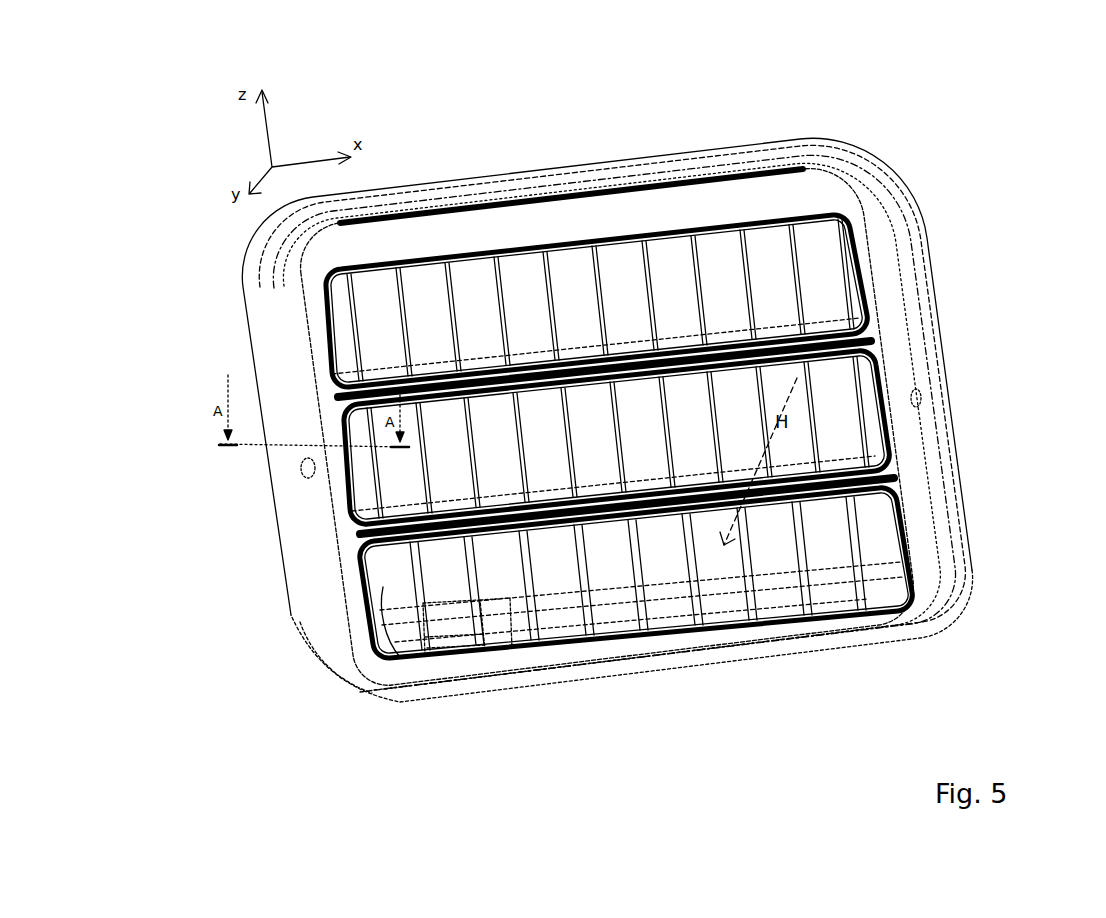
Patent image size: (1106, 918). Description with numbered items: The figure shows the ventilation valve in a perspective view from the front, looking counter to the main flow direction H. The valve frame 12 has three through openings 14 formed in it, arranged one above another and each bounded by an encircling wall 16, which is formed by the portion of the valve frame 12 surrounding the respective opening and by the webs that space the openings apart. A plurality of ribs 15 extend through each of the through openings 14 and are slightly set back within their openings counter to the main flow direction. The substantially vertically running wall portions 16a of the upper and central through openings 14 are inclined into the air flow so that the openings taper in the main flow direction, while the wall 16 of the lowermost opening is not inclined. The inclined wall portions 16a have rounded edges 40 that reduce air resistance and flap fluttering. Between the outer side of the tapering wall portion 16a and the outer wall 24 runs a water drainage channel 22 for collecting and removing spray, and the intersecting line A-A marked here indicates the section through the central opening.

The valve frame 12 is at (722, 187).
The through openings 14 is at (616, 434).
The ribs 15 is at (568, 440).
The wall 16 is at (387, 640).
The wall portions 16a is at (320, 347).
The water drainage channel 22 is at (347, 508).
The outer wall 24 is at (337, 533).
The rounded edges 40 is at (866, 340).